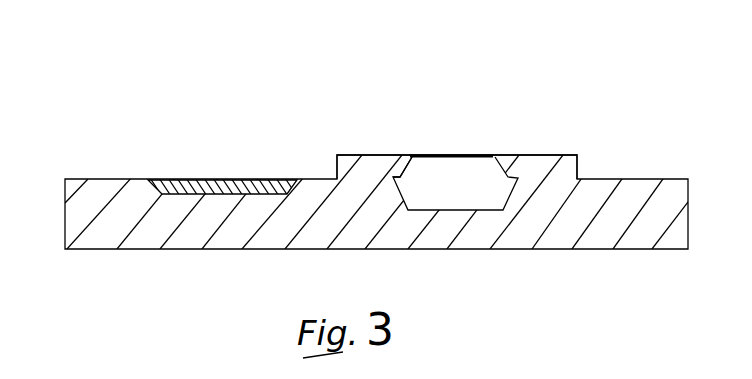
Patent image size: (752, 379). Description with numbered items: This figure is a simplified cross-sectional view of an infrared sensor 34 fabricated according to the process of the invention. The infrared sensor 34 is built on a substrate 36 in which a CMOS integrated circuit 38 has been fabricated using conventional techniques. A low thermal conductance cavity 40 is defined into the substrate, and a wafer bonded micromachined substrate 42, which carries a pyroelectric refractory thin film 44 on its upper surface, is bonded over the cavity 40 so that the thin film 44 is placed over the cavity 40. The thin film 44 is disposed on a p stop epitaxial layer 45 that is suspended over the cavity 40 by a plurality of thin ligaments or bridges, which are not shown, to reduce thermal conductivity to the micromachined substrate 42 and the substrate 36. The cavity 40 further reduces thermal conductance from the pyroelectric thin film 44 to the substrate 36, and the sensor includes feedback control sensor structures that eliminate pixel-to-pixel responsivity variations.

The infrared sensor 34 is at (465, 96).
The substrate 36 is at (135, 238).
The CMOS integrated circuit 38 is at (252, 179).
The low thermal conductance cavity 40 is at (467, 210).
The wafer bonded micromachined substrate 42 is at (578, 155).
The pyroelectric refractory thin film 44 is at (430, 155).
The p stop epitaxial layer 45 is at (490, 155).